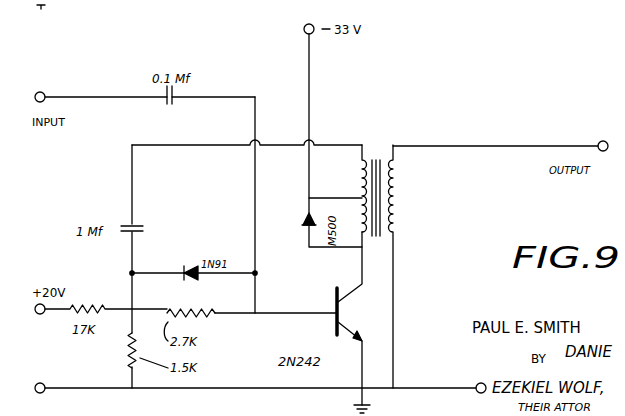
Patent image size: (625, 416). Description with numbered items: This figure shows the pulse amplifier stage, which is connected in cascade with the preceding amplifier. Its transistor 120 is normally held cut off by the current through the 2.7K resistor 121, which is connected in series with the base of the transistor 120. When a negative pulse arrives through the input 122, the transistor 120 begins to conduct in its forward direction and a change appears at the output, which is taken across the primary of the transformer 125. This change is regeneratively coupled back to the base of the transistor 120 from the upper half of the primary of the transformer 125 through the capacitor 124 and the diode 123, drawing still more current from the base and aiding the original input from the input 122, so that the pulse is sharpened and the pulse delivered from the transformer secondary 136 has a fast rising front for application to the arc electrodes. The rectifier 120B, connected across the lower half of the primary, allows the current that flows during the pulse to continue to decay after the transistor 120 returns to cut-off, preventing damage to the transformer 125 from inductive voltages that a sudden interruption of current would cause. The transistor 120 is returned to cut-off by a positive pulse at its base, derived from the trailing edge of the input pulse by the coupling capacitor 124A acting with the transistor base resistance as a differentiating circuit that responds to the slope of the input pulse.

The transistor 120 is at (343, 313).
The rectifier 120B is at (302, 230).
The 2.7K resistor 121 is at (218, 318).
The input 122 is at (101, 81).
The diode 123 is at (187, 268).
The capacitor 124 is at (127, 222).
The 0.1 mfd. coupling capacitor 124A is at (165, 105).
The transformer 125 is at (374, 160).
The transformer secondary 136 is at (397, 224).